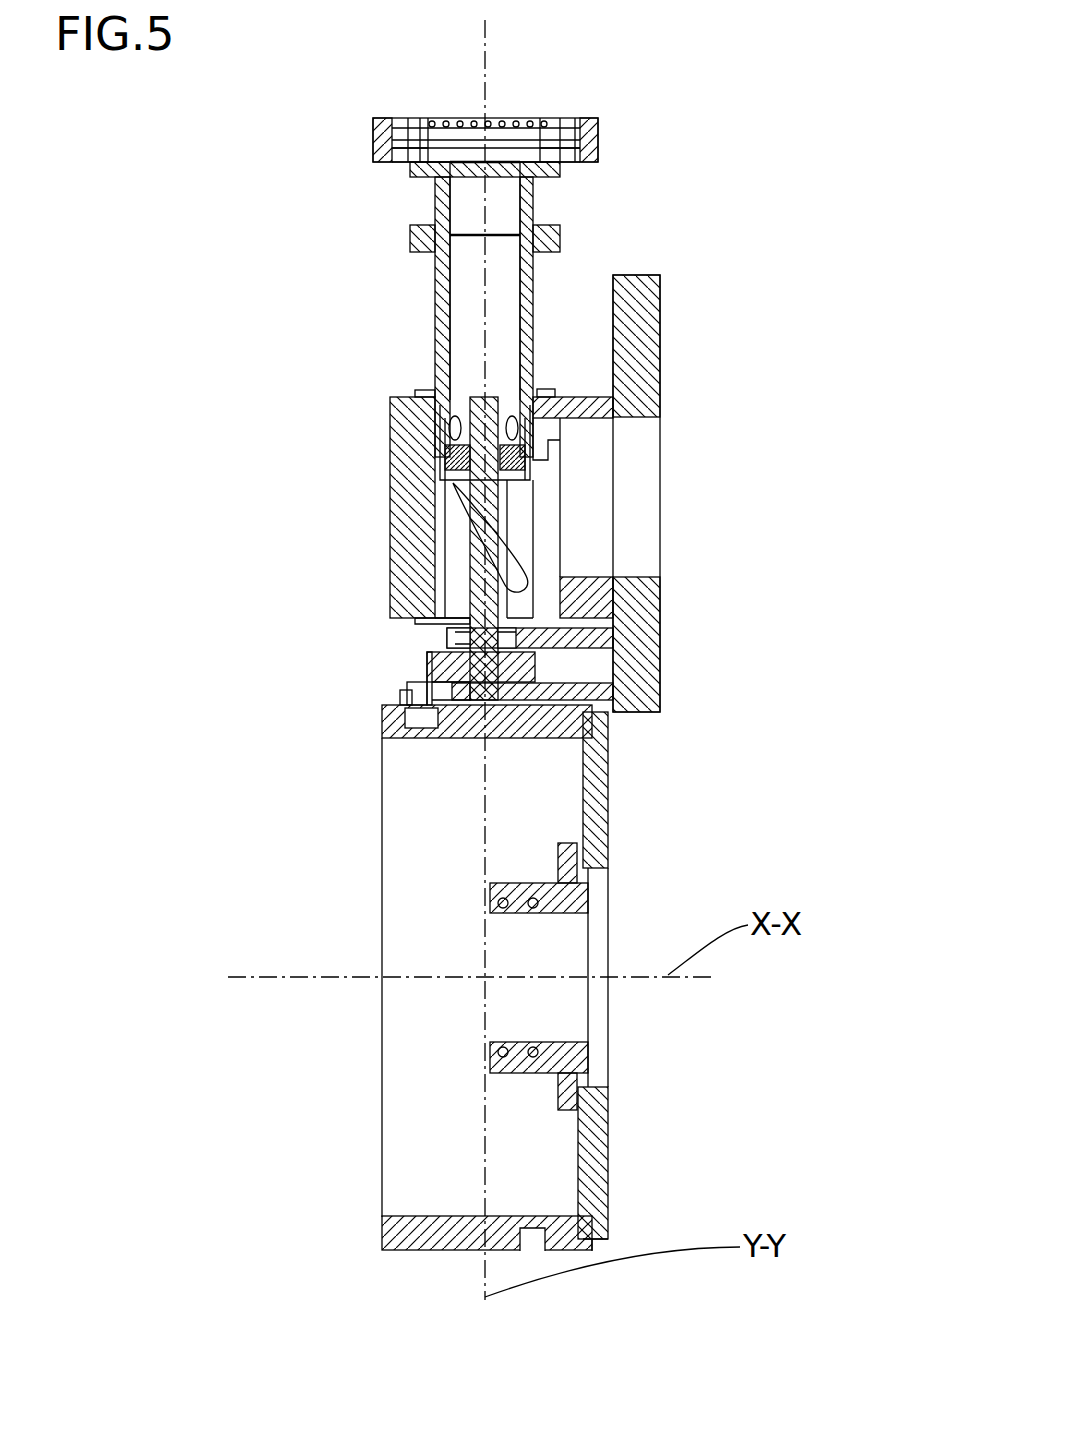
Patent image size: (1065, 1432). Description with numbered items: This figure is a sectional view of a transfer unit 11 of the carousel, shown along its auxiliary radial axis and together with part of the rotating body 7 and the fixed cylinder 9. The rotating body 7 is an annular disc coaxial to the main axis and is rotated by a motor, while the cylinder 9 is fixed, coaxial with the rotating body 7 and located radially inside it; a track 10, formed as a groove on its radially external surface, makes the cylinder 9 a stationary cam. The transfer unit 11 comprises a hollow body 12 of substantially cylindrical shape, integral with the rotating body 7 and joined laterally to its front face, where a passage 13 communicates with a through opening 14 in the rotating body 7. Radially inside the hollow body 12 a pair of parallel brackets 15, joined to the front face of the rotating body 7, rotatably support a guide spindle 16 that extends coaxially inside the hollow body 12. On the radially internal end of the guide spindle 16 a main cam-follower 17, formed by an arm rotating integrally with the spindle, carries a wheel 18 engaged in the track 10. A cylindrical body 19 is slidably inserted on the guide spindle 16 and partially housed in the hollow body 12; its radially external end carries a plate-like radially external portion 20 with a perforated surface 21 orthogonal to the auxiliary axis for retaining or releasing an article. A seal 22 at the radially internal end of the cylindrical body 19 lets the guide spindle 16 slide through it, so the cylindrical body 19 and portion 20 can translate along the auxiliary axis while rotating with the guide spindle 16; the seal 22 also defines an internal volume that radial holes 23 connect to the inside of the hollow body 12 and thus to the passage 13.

The rotating body 7 is at (648, 270).
The fixed cylinder 9 is at (625, 740).
The track 10 is at (400, 706).
The transfer unit 11 is at (355, 268).
The hollow body 12 is at (385, 478).
The passage 13 is at (565, 405).
The through opening 14 is at (640, 577).
The brackets 15 is at (613, 695).
The guide spindle 16 is at (503, 515).
The main cam-follower 17 is at (420, 663).
The wheel 18 is at (432, 718).
The cylindrical body 19 is at (435, 268).
The radially external portion 20 is at (383, 112).
The perforated surface 21 is at (558, 117).
The seal 22 is at (521, 423).
The radial holes 23 is at (455, 418).